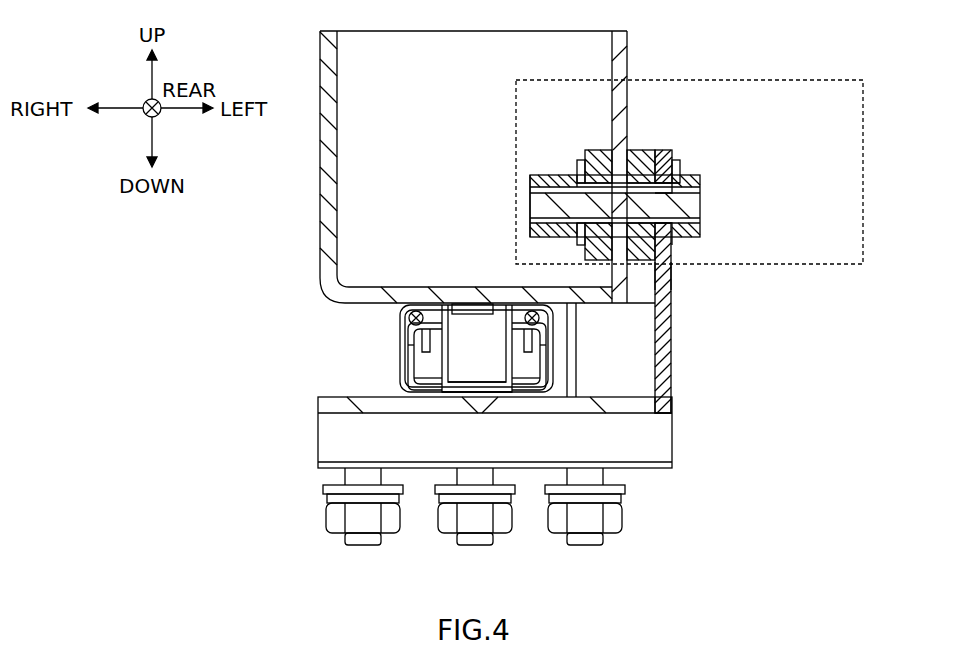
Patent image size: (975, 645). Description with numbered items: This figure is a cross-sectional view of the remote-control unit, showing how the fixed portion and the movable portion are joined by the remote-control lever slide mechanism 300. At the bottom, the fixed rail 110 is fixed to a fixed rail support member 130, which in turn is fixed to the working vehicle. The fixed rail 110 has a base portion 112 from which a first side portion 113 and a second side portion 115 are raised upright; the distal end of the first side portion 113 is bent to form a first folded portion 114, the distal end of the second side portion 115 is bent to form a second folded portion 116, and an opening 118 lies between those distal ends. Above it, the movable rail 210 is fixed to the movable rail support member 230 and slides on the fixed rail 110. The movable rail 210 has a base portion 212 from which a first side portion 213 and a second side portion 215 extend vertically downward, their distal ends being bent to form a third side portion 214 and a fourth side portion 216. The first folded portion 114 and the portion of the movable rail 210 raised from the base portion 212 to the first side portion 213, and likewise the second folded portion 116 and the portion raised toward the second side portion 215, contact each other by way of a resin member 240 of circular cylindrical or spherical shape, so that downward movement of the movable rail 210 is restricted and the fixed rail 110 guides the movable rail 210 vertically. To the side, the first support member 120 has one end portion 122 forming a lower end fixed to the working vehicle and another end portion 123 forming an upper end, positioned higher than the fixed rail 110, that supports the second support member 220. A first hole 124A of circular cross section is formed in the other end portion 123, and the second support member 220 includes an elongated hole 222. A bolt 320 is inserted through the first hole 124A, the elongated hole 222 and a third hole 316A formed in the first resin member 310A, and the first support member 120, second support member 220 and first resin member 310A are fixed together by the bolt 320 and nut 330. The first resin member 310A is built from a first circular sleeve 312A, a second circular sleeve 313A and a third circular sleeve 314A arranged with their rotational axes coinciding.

The fixed rail 110 is at (516, 405).
The base portion 112 is at (445, 393).
The first side portion 113 is at (440, 364).
The first folded portion 114 is at (424, 345).
The second side portion 115 is at (512, 366).
The second folded portion 116 is at (530, 345).
The opening 118 is at (473, 335).
The first support member 120 is at (680, 293).
The one end portion 122 is at (672, 398).
The other end portion 123 is at (672, 283).
The first hole 124A is at (662, 190).
The fixed rail support member 130 is at (318, 409).
The movable rail 210 is at (388, 316).
The base portion 212 is at (425, 305).
The first side portion 213 is at (408, 352).
The third side portion 214 is at (430, 380).
The second side portion 215 is at (546, 352).
The fourth side portion 216 is at (524, 380).
The second support member 220 is at (628, 45).
The elongated hole 222 is at (650, 232).
The movable rail support member 230 is at (337, 97).
The resin member 240 is at (410, 312).
The remote-control lever slide mechanism 300 is at (905, 146).
The first resin member 310A is at (726, 90).
The first circular sleeve 312A is at (656, 150).
The second circular sleeve 313A is at (632, 170).
The third circular sleeve 314A is at (606, 165).
The third hole 316A is at (660, 215).
The bolt 320 is at (700, 208).
The nut 330 is at (540, 175).